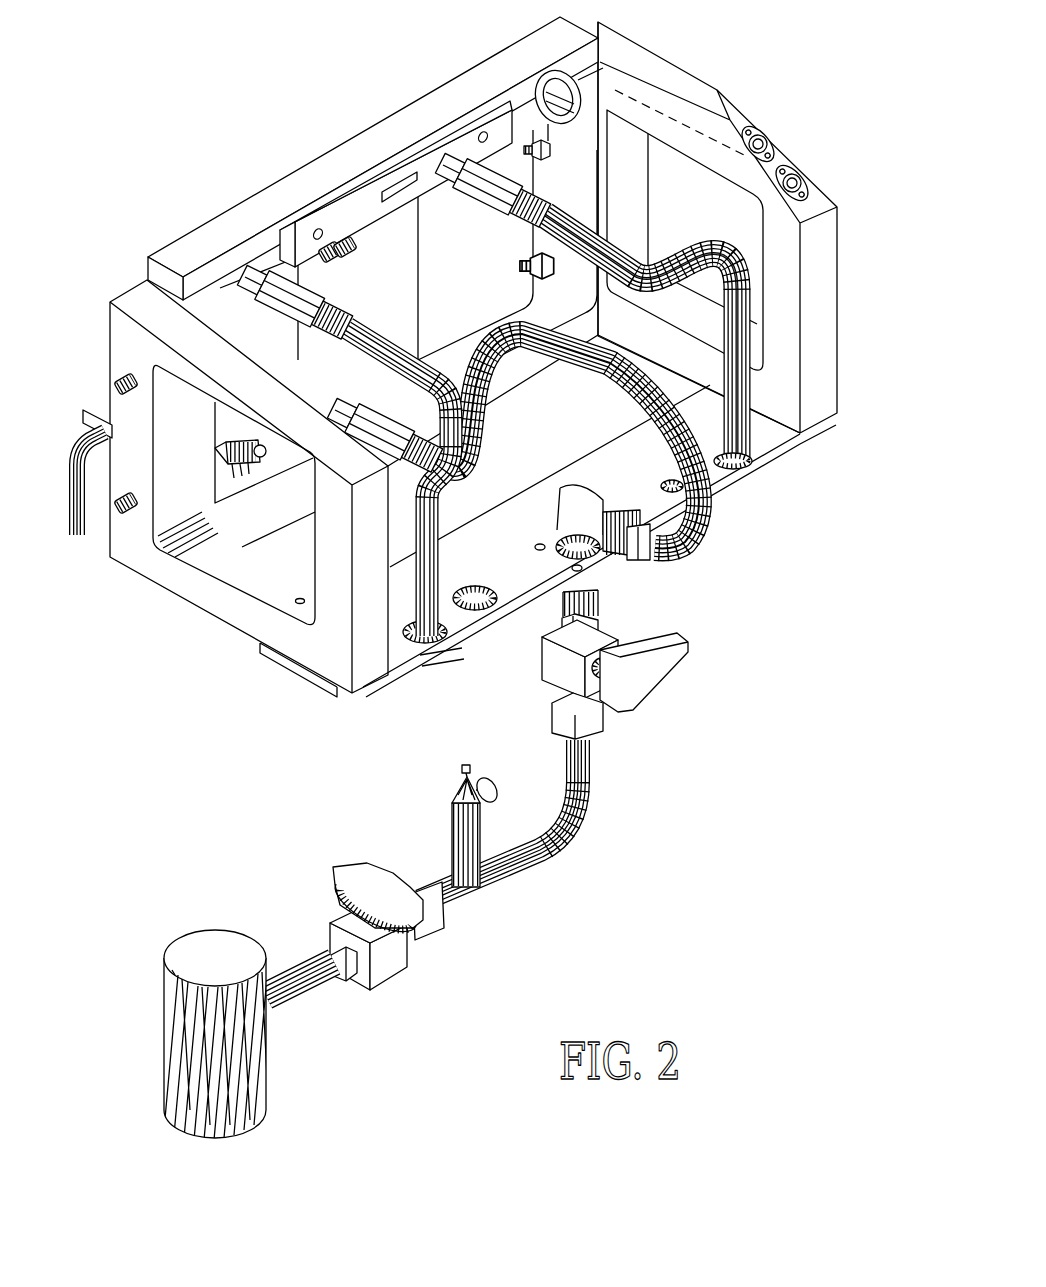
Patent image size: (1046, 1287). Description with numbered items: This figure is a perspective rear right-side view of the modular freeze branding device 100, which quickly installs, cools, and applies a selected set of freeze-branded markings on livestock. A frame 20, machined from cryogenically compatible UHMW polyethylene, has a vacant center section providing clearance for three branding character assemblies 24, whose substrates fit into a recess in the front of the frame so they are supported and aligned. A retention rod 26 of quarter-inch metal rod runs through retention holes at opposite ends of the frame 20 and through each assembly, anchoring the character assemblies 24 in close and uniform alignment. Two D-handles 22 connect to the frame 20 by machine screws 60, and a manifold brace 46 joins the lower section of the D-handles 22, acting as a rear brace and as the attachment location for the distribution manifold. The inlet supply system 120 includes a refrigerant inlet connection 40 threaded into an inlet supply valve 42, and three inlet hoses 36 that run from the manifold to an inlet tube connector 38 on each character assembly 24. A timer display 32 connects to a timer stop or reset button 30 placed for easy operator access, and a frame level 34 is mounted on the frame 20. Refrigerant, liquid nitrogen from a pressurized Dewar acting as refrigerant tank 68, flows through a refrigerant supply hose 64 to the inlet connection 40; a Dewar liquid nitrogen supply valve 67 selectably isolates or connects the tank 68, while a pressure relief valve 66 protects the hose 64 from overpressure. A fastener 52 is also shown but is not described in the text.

The frame 20 is at (292, 180).
The D-handles 22 is at (668, 62).
The branding character assemblies 24 is at (444, 234).
The retention rod 26 is at (801, 180).
The timer stop or reset button 30 is at (769, 135).
The timer display 32 is at (551, 72).
The frame level 34 is at (446, 134).
The inlet hoses 36 is at (681, 263).
The inlet tube connector 38 is at (462, 203).
The refrigerant inlet connection 40 is at (622, 720).
The inlet supply valve 42 is at (614, 625).
The manifold brace 46 is at (762, 462).
The fastener 52 is at (228, 468).
The machine screws 60 is at (117, 514).
The refrigerant supply hose 64 is at (552, 858).
The pressure relief valve 66 is at (458, 784).
The Dewar liquid nitrogen supply valve 67 is at (349, 860).
The refrigerant tank 68 is at (212, 943).
The freeze branding device 100 is at (444, 574).
The inlet supply system 120 is at (444, 352).